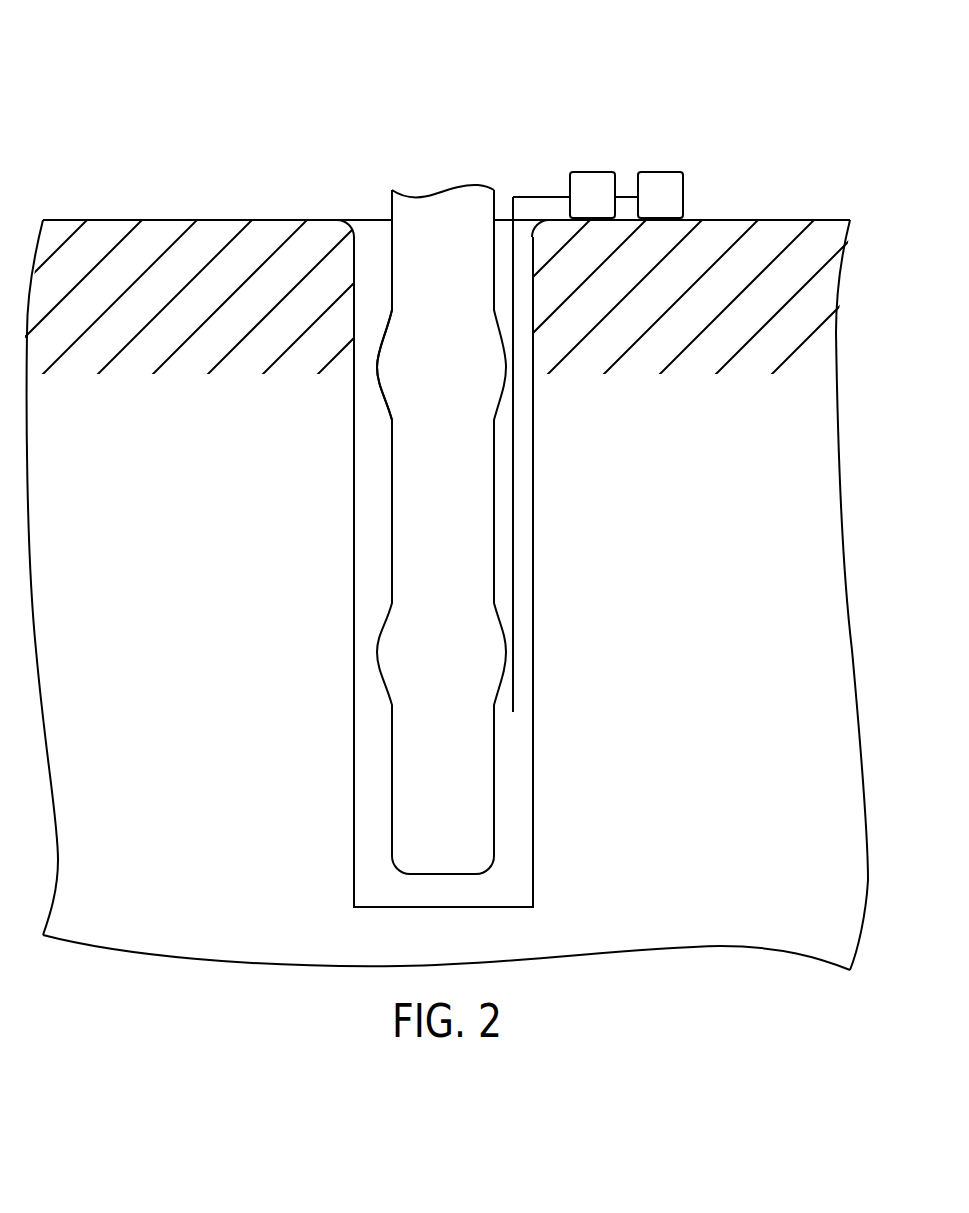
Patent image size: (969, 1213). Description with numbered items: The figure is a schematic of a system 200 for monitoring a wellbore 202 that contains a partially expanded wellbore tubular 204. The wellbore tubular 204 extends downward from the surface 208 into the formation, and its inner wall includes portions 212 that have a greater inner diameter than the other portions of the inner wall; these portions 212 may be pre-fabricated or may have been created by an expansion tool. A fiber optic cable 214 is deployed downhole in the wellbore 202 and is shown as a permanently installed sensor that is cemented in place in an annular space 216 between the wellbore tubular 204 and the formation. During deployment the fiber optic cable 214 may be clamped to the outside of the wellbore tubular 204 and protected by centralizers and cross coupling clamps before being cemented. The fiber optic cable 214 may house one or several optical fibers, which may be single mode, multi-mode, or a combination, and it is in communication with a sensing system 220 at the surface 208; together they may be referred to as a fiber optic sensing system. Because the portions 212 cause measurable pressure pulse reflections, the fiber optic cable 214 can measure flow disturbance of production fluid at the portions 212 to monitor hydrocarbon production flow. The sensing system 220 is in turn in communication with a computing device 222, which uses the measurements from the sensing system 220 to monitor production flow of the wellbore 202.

The system 200 is at (157, 137).
The wellbore 202 is at (534, 745).
The wellbore tubular 204 is at (392, 490).
The surface 208 is at (714, 218).
The portions 212 is at (377, 370).
The fiber optic cable 214 is at (530, 195).
The annular space 216 is at (521, 502).
The sensing system 220 is at (594, 171).
The computing device 222 is at (662, 171).